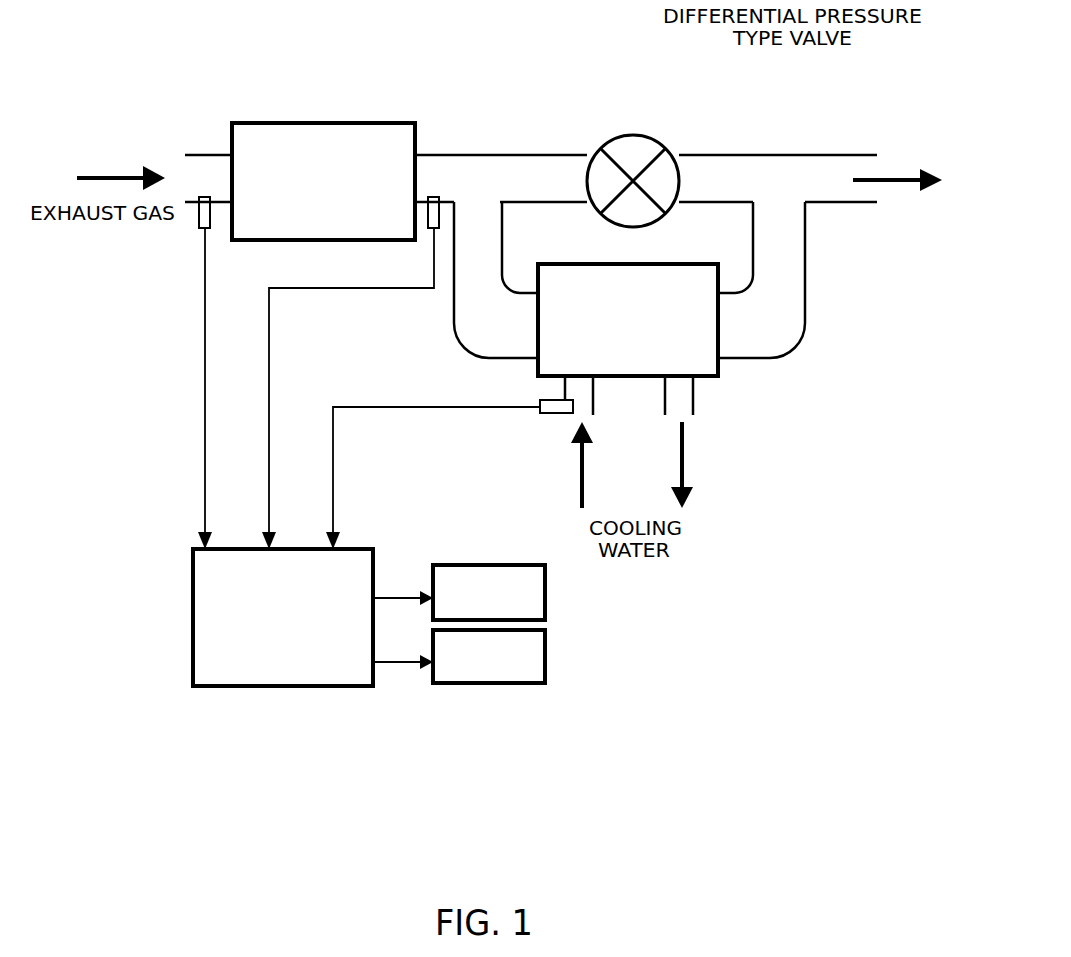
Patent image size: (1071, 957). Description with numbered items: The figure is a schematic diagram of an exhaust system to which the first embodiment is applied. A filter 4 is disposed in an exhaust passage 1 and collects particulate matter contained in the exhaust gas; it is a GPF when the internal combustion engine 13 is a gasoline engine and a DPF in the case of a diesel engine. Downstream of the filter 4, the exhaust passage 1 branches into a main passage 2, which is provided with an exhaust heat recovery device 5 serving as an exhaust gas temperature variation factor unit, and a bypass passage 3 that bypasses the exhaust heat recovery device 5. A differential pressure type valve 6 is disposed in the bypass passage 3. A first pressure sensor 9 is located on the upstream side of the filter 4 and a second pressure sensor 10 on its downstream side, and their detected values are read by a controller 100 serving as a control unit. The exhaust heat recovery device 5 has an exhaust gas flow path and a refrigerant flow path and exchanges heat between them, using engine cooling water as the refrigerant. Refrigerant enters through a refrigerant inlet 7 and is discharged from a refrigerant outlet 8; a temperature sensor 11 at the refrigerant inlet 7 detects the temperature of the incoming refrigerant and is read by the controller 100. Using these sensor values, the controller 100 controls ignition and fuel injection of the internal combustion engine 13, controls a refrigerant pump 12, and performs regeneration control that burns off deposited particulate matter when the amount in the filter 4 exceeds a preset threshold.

The exhaust passage 1 is at (220, 155).
The main passage 2 is at (463, 326).
The bypass passage 3 is at (537, 155).
The filter 4 is at (335, 123).
The exhaust heat recovery device 5 is at (720, 368).
The differential pressure type valve 6 is at (650, 137).
The refrigerant inlet 7 is at (595, 397).
The refrigerant outlet 8 is at (697, 397).
The first pressure sensor 9 is at (199, 210).
The second pressure sensor 10 is at (437, 200).
The temperature sensor 11 is at (555, 413).
The refrigerant pump 12 is at (545, 594).
The internal combustion engine 13 is at (545, 659).
The controller 100 is at (283, 686).